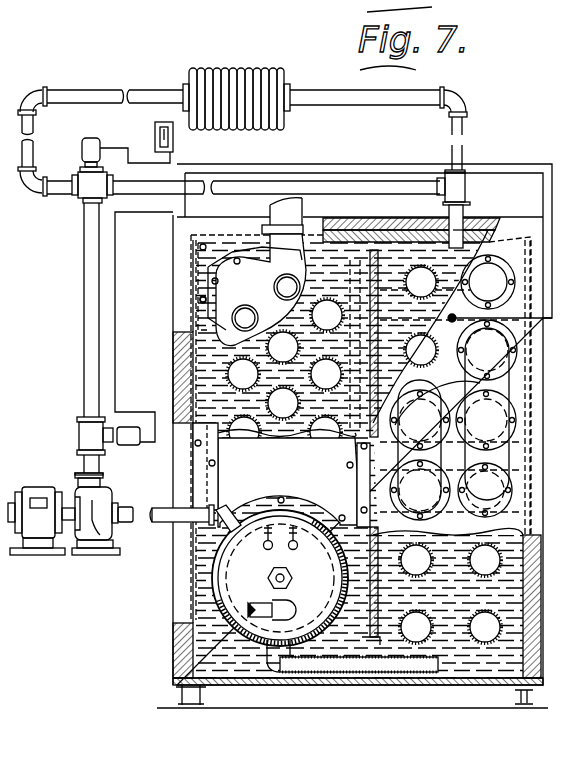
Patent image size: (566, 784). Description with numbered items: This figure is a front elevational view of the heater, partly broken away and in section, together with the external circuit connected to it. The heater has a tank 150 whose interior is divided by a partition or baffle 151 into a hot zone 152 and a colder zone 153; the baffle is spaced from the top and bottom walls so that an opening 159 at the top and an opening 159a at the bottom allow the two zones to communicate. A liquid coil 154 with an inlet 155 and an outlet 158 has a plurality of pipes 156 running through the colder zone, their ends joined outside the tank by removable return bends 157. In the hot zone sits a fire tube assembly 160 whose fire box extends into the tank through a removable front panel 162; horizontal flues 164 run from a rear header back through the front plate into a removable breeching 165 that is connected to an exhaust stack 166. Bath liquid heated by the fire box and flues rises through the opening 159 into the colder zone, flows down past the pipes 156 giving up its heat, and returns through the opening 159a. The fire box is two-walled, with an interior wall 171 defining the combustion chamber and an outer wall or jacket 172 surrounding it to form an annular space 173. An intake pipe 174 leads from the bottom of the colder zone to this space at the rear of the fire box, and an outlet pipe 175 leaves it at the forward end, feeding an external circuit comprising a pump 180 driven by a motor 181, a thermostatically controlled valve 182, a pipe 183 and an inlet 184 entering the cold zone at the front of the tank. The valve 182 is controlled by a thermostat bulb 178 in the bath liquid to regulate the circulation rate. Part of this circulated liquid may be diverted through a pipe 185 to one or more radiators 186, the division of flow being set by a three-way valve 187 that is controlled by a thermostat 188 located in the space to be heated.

The tank 150 is at (466, 690).
The partition or baffle 151 is at (370, 617).
The hot zone 152 is at (230, 660).
The colder zone 153 is at (486, 667).
The liquid coil 154 is at (420, 490).
The inlet 155 is at (500, 647).
The pipes 156 is at (443, 520).
The removable return bends 157 is at (420, 446).
The outlet 158 is at (493, 260).
The opening 159 is at (373, 250).
The opening 159a is at (371, 645).
The fire tube assembly 160 is at (226, 358).
The removable front panel 162 is at (213, 254).
The horizontal flues 164 is at (183, 393).
The removable breeching 165 is at (233, 293).
The exhaust stack 166 is at (270, 208).
The interior wall 171 is at (327, 533).
The outer wall or jacket 172 is at (263, 627).
The annular space 173 is at (173, 656).
The intake pipe 174 is at (396, 677).
The outlet pipe 175 is at (175, 515).
The thermostat bulb 178 is at (486, 410).
The pump 180 is at (97, 530).
The motor 181 is at (30, 492).
The thermostatically controlled valve 182 is at (87, 432).
The pipe 183 is at (90, 342).
The inlet 184 is at (481, 229).
The pipe 185 is at (100, 95).
The radiator 186 is at (259, 68).
The three-way valve 187 is at (93, 183).
The thermostat 188 is at (173, 147).